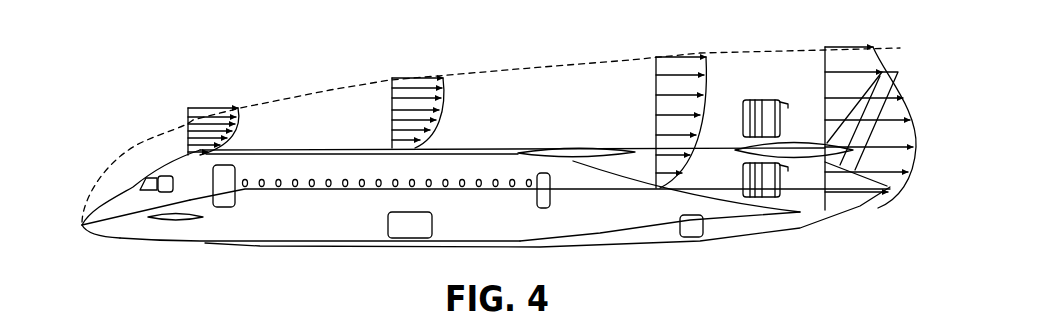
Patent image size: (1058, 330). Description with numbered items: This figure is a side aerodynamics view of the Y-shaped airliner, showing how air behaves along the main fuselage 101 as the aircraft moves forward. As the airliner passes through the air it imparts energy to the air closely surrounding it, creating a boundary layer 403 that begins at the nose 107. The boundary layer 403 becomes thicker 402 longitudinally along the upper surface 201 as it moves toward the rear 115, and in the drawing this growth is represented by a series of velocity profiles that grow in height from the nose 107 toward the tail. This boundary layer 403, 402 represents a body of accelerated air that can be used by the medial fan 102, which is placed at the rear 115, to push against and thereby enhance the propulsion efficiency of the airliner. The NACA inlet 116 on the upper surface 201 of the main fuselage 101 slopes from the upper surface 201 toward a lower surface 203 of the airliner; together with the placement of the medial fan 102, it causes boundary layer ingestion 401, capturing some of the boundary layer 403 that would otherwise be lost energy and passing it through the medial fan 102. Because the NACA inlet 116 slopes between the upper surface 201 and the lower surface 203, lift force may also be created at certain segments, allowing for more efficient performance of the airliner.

The main fuselage 101 is at (312, 205).
The medial fan 102 is at (790, 160).
The nose 107 is at (82, 224).
The rear 115 is at (900, 187).
The NACA inlet 116 is at (604, 168).
The upper surface 201 is at (257, 147).
The lower surface 203 is at (768, 214).
The boundary layer ingestion 401 is at (700, 177).
The thicker boundary layer 402 is at (562, 110).
The boundary layer 403 is at (328, 118).